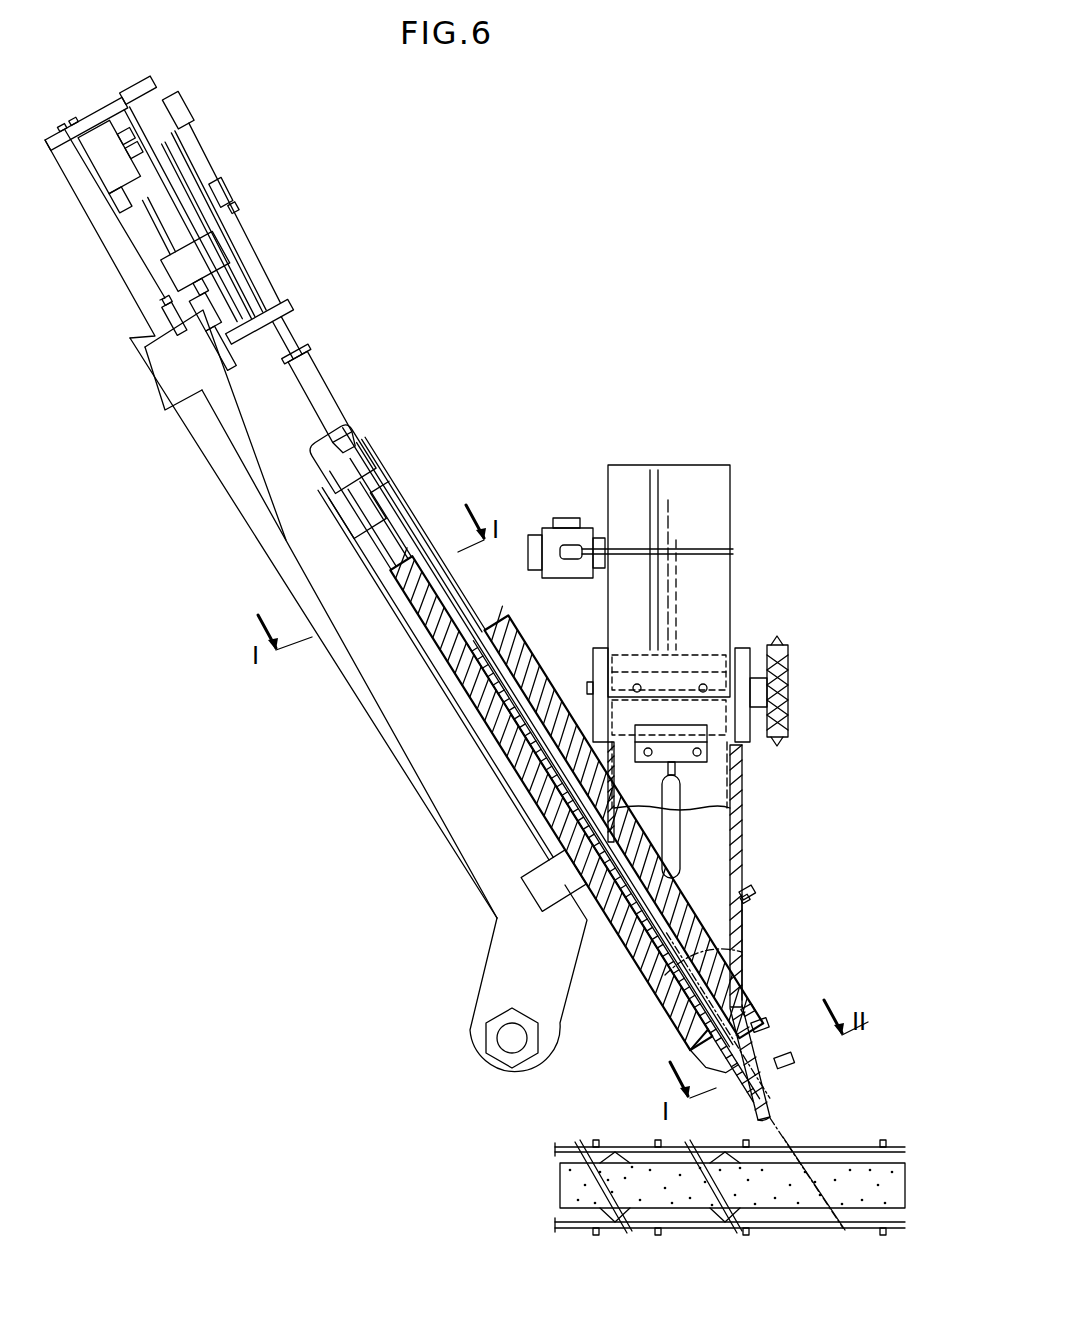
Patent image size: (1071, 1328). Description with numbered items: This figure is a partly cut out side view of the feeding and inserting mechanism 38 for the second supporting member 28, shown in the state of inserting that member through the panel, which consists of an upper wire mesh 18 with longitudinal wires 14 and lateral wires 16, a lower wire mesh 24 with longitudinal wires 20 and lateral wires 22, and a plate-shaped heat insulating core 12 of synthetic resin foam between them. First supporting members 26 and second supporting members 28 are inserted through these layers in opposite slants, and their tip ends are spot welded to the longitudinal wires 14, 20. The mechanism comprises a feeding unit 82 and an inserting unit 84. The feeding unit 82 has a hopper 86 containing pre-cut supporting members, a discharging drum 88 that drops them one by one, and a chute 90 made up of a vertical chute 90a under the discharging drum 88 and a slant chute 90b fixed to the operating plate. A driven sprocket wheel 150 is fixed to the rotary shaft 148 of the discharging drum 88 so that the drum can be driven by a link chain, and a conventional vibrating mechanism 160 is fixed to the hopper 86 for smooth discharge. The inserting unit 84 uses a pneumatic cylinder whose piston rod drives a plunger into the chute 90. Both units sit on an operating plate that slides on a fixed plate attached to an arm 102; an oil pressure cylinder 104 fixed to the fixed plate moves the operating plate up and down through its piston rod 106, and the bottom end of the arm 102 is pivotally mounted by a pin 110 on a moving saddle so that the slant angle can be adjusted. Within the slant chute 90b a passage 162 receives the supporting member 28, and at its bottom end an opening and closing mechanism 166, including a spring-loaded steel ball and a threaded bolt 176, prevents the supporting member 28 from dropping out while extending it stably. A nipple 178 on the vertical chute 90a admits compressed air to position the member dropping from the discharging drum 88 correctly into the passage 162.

The heat insulating core 12 is at (560, 1182).
The longitudinal wires 14 is at (598, 1143).
The lateral wires 16 is at (647, 1143).
The upper wire mesh 18 is at (553, 1146).
The longitudinal wires 20 is at (598, 1235).
The lateral wires 22 is at (655, 1235).
The lower wire mesh 24 is at (553, 1230).
The first supporting member 26 is at (625, 1142).
The second supporting member 28 is at (745, 952).
The feeding and inserting mechanism 38 is at (405, 255).
The feeding unit 82 is at (745, 474).
The inserting unit 84 is at (353, 347).
The hopper 86 is at (730, 517).
The discharging drum 88 is at (738, 740).
The chute 90 is at (791, 837).
The vertical chute 90a is at (745, 860).
The slant chute 90b is at (784, 1096).
The arm 102 is at (415, 785).
The oil pressure cylinder 104 is at (157, 217).
The piston rod 106 is at (307, 397).
The pin 110 is at (495, 1038).
The rotary shaft 148 is at (748, 644).
The driven sprocket wheel 150 is at (790, 664).
The vibrating mechanism 160 is at (562, 528).
The passage 162 is at (800, 1076).
The opening and closing mechanism 166 is at (766, 1027).
The threaded bolt 176 is at (752, 1020).
The nipple 178 is at (757, 897).